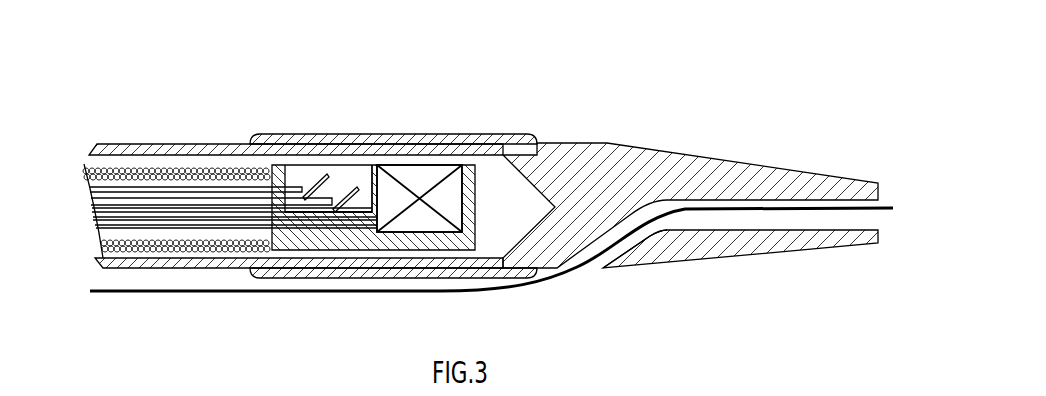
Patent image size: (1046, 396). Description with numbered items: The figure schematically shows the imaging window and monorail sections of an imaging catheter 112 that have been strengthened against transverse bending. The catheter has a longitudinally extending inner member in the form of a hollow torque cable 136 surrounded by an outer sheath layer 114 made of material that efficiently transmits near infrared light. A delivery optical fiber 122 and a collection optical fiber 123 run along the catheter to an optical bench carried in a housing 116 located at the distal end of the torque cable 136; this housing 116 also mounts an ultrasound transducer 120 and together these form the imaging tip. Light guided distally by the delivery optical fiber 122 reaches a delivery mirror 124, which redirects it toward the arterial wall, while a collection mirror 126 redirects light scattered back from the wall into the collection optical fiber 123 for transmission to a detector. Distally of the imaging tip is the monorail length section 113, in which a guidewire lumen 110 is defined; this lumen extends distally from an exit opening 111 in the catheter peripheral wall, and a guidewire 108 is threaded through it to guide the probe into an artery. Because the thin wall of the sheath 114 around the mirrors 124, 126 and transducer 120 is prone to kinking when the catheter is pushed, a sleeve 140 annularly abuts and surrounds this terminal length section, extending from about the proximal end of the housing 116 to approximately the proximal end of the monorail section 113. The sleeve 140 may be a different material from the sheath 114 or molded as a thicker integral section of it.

The guidewire 108 is at (537, 288).
The guidewire lumen 110 is at (806, 220).
The exit opening 111 is at (588, 272).
The imaging catheter 112 is at (651, 111).
The monorail length section 113 is at (780, 168).
The outer sheath layer 114 is at (168, 148).
The housing 116 is at (353, 242).
The ultrasound transducer 120 is at (415, 177).
The delivery optical fiber 122 is at (92, 192).
The collection optical fiber 123 is at (92, 203).
The delivery mirror 124 is at (313, 182).
The collection mirror 126 is at (358, 192).
The torque cable 136 is at (87, 170).
The sleeve 140 is at (475, 134).